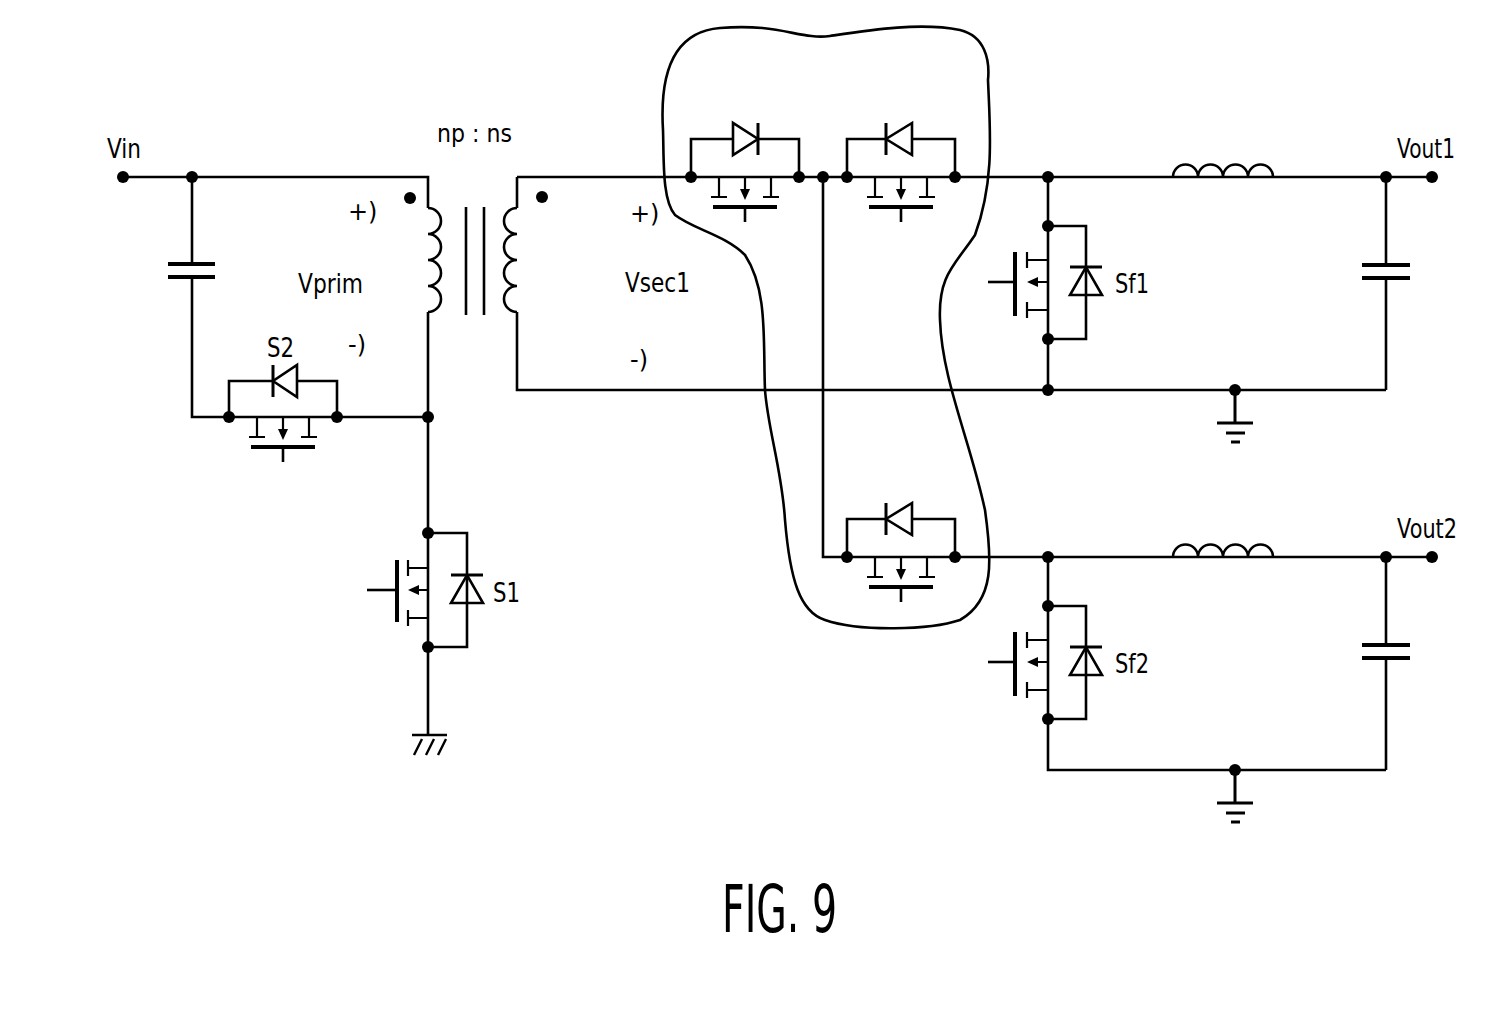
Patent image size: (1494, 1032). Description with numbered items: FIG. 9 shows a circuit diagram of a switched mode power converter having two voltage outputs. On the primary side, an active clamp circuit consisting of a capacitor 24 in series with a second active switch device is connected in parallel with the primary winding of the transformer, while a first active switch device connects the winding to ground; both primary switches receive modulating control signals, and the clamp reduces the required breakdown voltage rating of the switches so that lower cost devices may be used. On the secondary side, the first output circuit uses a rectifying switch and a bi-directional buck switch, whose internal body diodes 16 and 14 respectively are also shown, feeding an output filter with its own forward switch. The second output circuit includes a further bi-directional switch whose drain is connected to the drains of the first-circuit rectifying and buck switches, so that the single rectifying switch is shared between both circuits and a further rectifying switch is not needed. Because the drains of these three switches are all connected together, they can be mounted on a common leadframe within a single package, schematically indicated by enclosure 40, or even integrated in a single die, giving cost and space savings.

The internal body diode 14 is at (902, 123).
The internal body diode 16 is at (745, 123).
The capacitor 24 is at (182, 279).
The enclosure 40 is at (987, 70).